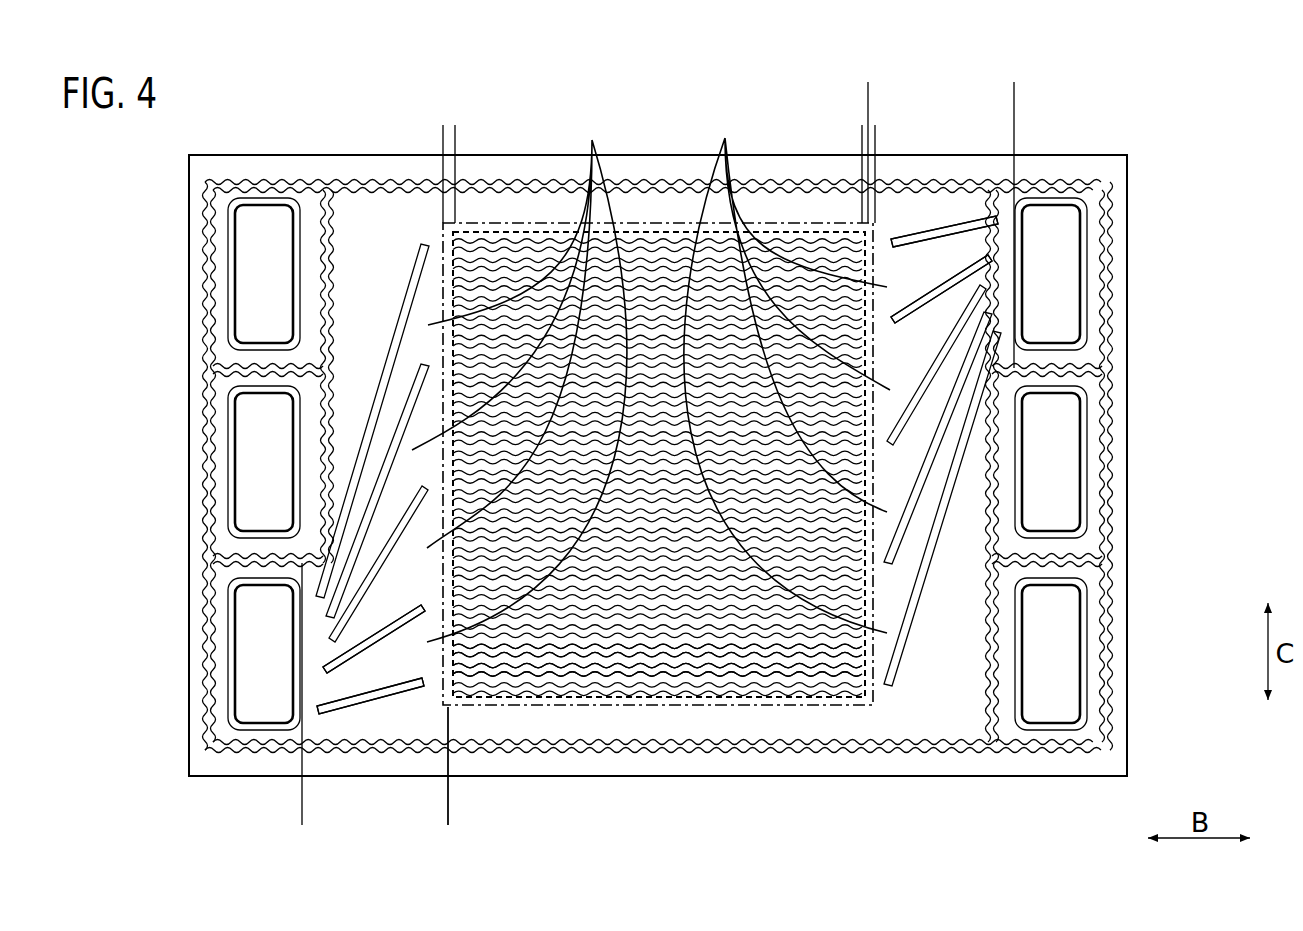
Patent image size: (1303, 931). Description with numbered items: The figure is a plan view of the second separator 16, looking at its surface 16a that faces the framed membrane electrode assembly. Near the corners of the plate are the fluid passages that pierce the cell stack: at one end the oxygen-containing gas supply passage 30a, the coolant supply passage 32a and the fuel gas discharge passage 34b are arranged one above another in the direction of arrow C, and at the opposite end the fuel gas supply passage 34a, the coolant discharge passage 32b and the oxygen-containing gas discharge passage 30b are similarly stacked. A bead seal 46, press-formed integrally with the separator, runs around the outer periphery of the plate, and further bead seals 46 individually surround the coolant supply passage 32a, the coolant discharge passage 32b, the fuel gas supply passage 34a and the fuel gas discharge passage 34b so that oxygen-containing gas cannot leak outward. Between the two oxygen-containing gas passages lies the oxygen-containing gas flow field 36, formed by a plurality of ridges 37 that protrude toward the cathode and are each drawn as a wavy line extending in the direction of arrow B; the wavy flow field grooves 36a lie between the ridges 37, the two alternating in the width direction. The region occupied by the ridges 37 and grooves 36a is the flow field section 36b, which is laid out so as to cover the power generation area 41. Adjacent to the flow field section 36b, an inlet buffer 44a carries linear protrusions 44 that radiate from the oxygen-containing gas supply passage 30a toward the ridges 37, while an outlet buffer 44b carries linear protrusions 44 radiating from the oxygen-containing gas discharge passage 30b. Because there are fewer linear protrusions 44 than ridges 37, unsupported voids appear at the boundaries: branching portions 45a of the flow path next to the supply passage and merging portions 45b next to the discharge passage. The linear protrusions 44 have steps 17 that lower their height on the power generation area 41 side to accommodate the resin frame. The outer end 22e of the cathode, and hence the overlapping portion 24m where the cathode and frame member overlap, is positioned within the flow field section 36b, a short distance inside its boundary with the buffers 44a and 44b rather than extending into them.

The second separator 16 is at (1053, 148).
The surface 16a is at (657, 172).
The steps 17 is at (408, 303).
The outer end 22e is at (485, 228).
The overlapping portion 24m is at (487, 133).
The oxygen-containing gas supply passage 30a is at (1034, 283).
The oxygen-containing gas discharge passage 30b is at (247, 663).
The coolant supply passage 32a is at (1034, 474).
The coolant discharge passage 32b is at (247, 474).
The fuel gas supply passage 34a is at (247, 283).
The fuel gas discharge passage 34b is at (1034, 663).
The oxygen-containing gas flow field 36 is at (520, 723).
The wavy flow field grooves 36a is at (605, 658).
The flow field section 36b is at (480, 710).
The ridges 37 is at (693, 668).
The power generation area 41 is at (747, 707).
The linear protrusions 44 is at (367, 697).
The inlet buffer 44a is at (1014, 90).
The outlet buffer 44b is at (302, 818).
The branching portions 45a is at (787, 373).
The merging portions 45b is at (519, 378).
The bead seal 46 is at (256, 183).